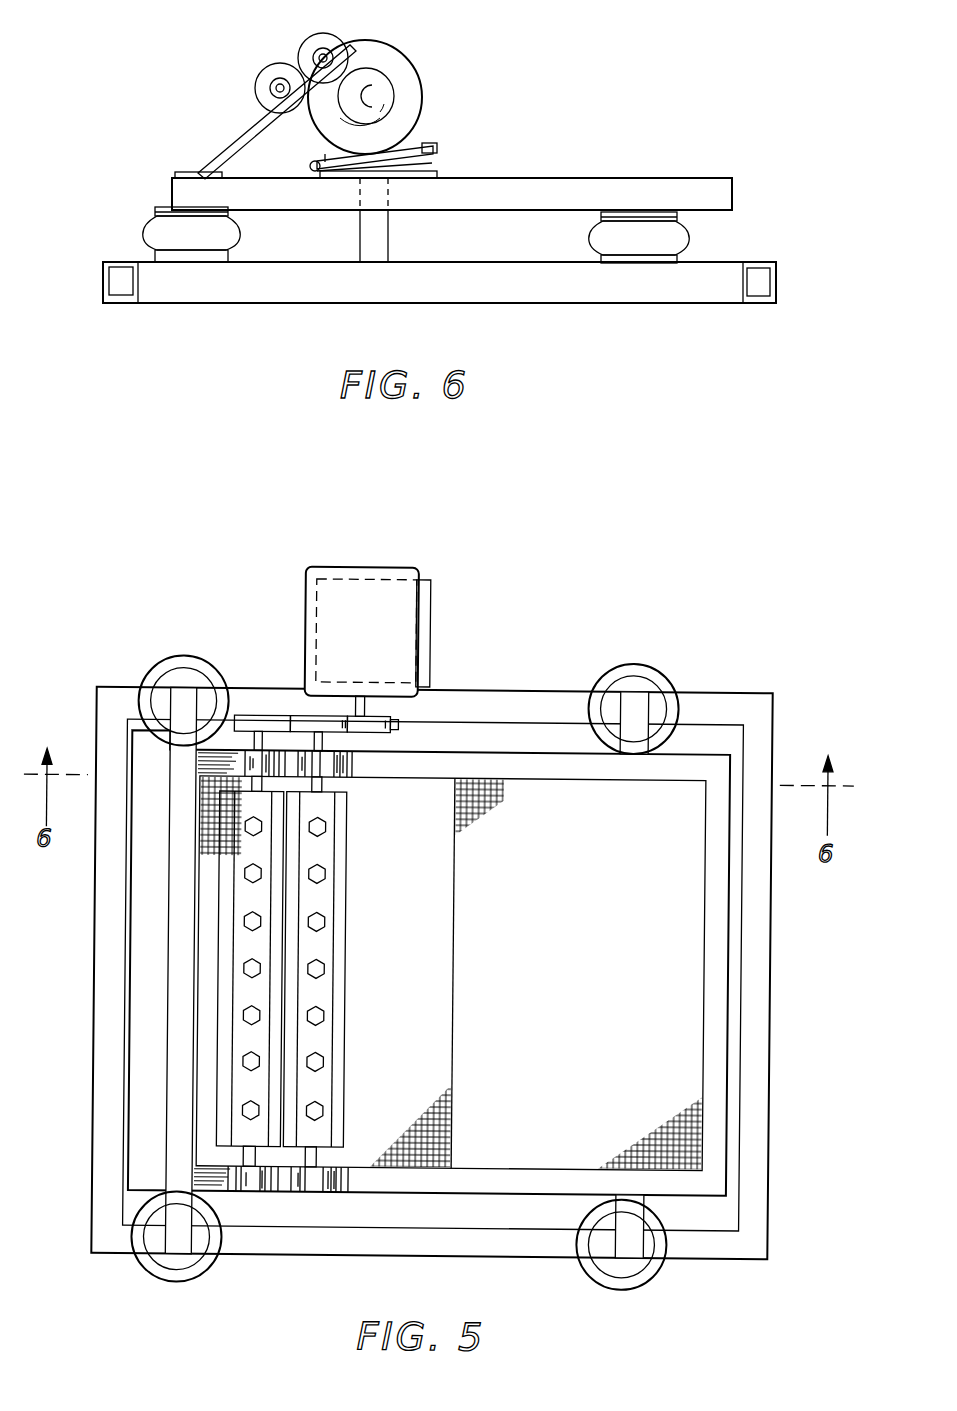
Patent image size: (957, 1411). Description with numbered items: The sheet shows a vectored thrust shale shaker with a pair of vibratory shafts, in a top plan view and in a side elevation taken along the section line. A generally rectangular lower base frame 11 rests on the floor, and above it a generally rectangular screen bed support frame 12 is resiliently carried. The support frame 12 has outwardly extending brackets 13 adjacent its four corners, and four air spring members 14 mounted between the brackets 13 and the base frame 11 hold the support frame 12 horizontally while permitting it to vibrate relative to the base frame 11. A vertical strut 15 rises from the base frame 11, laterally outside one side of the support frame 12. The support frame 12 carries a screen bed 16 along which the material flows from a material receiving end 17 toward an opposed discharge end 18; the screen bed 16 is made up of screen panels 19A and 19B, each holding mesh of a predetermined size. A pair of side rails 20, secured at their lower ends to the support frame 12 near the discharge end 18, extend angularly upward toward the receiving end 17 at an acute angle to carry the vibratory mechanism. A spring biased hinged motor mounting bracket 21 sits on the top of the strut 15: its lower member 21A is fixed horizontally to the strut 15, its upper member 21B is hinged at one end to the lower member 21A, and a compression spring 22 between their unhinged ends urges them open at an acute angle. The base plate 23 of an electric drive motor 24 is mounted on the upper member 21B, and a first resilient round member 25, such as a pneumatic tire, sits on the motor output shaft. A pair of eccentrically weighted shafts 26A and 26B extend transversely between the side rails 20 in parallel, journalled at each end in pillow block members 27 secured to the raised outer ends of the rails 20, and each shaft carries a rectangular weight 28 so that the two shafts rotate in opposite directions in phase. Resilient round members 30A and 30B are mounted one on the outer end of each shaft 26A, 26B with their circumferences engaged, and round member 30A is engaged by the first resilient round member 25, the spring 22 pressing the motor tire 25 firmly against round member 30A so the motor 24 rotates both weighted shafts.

In FIG. 6, the lower base frame 11 is at (652, 292).
In FIG. 5, the lower base frame 11 is at (770, 1128).
In FIG. 6, the screen bed support frame 12 is at (547, 178).
In FIG. 5, the screen bed support frame 12 is at (735, 987).
In FIG. 5, the outwardly extending brackets 13 is at (178, 700).
In FIG. 6, the air spring members 14 is at (160, 235).
In FIG. 5, the air spring members 14 is at (166, 658).
In FIG. 6, the vertical strut 15 is at (388, 240).
In FIG. 5, the screen bed 16 is at (693, 976).
In FIG. 6, the material receiving end 17 is at (700, 178).
In FIG. 5, the material receiving end 17 is at (690, 1075).
In FIG. 6, the discharge end 18 is at (212, 172).
In FIG. 5, the screen panel 19A is at (425, 997).
In FIG. 5, the screen panel 19B is at (582, 1005).
In FIG. 6, the side rails 20 is at (238, 140).
In FIG. 5, the side rails 20 is at (200, 772).
In FIG. 6, the hinged motor mounting bracket 21 is at (318, 195).
In FIG. 5, the hinged motor mounting bracket 21 is at (441, 590).
In FIG. 6, the lower member 21A is at (432, 188).
In FIG. 6, the upper member 21B is at (432, 150).
In FIG. 5, the upper member 21B is at (427, 613).
In FIG. 6, the compression spring 22 is at (428, 161).
In FIG. 6, the base plate 23 is at (422, 142).
In FIG. 6, the electric drive motor 24 is at (423, 83).
In FIG. 5, the electric drive motor 24 is at (376, 651).
In FIG. 6, the first resilient round member 25 is at (396, 86).
In FIG. 5, the first resilient round member 25 is at (396, 725).
In FIG. 5, the eccentrically weighted shaft 26A is at (345, 910).
In FIG. 5, the eccentrically weighted shaft 26B is at (230, 1020).
In FIG. 5, the pillow block members 27 is at (235, 765).
In FIG. 5, the rectangular weight 28 is at (245, 1080).
In FIG. 6, the resilient round member 30A is at (332, 38).
In FIG. 5, the resilient round member 30A is at (305, 717).
In FIG. 6, the resilient round member 30B is at (273, 70).
In FIG. 5, the resilient round member 30B is at (248, 717).